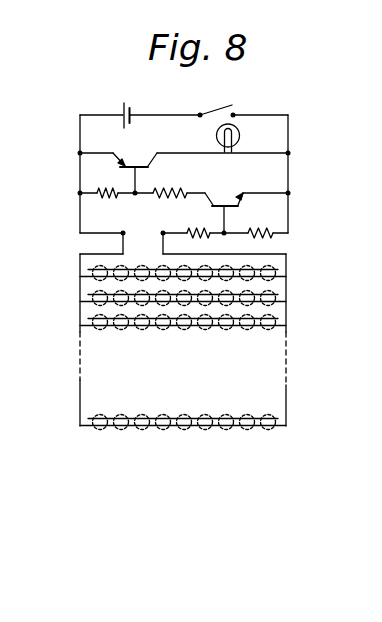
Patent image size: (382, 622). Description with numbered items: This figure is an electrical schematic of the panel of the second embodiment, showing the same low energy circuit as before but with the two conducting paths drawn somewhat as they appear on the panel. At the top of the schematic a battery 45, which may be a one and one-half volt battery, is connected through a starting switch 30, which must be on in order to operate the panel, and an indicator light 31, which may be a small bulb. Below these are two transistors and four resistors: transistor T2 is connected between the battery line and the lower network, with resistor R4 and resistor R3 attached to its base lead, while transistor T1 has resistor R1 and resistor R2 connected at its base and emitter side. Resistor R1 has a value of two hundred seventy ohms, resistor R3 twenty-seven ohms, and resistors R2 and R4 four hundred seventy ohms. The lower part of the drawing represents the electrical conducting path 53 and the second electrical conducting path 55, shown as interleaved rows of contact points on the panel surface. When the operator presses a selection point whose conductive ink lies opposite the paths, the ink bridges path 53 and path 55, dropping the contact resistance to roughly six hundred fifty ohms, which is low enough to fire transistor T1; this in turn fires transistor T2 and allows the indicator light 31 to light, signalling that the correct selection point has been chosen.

The battery 45 is at (126, 106).
The switch 30 is at (213, 108).
The indicator light 31 is at (240, 124).
The transistor T2 is at (135, 161).
The resistor R4 is at (105, 181).
The resistor R3 is at (171, 182).
The transistor T1 is at (224, 202).
The resistor R1 is at (196, 222).
The resistor R2 is at (262, 222).
The electrical conducting path material 53 is at (77, 256).
The second electrical conducting path material 55 is at (289, 258).